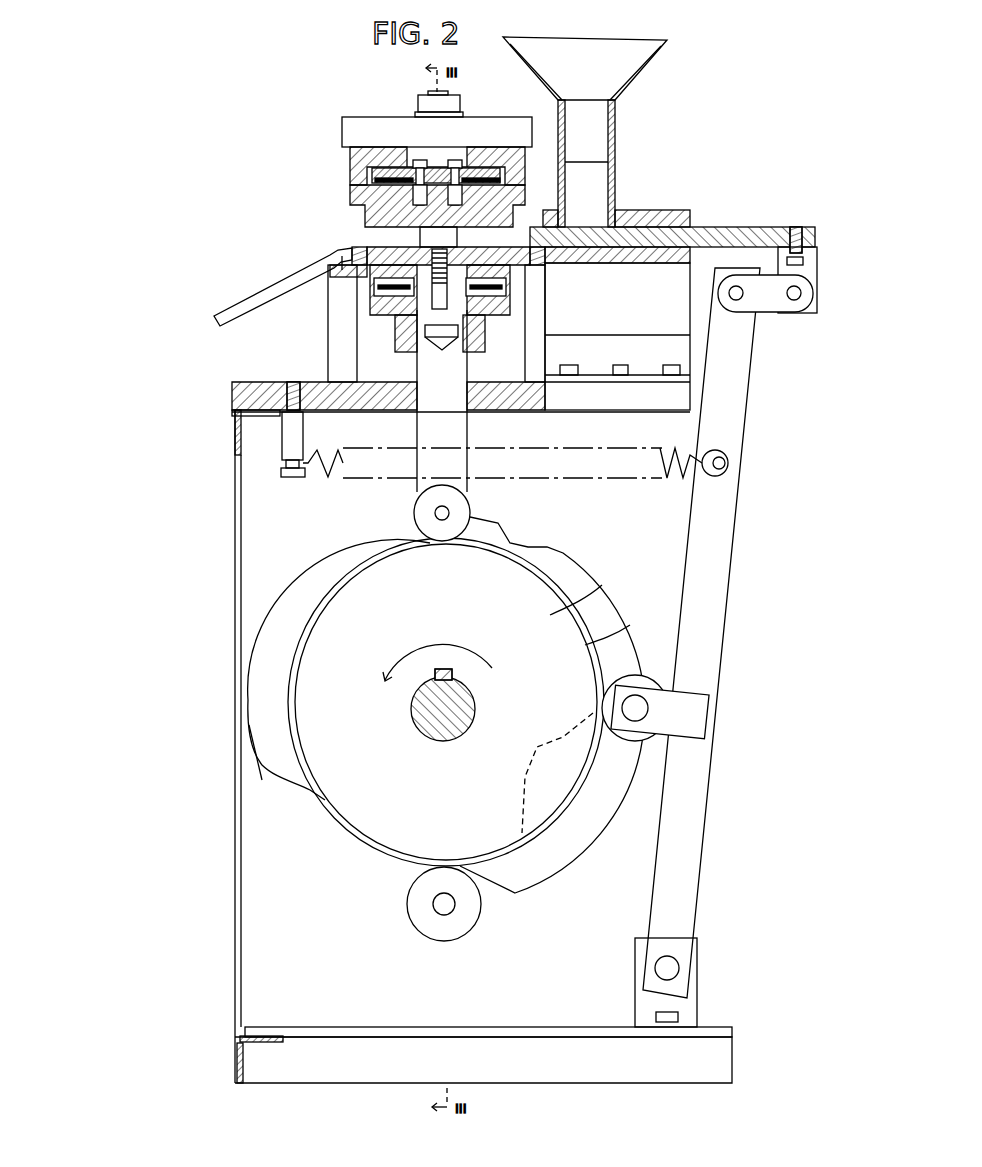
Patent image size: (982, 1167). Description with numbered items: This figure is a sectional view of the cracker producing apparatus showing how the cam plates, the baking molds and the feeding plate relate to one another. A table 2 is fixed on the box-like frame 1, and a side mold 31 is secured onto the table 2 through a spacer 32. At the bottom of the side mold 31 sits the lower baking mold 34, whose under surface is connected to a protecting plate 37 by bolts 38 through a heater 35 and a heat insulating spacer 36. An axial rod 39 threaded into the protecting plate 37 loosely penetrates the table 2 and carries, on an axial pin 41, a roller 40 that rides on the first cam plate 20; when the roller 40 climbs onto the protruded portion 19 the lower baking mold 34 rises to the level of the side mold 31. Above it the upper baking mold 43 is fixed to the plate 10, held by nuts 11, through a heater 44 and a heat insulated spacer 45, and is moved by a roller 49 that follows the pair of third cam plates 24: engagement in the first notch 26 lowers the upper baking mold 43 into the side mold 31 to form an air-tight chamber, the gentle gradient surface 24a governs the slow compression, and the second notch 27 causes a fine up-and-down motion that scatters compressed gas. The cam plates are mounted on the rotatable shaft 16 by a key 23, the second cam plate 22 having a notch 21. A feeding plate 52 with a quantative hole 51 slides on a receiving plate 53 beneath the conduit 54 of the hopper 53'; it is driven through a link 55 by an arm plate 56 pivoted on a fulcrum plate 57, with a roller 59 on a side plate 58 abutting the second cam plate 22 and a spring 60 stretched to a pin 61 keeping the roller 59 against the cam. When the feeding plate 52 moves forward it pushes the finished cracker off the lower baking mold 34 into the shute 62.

The box-like frame 1 is at (233, 436).
The table 2 is at (262, 380).
The plate 10 is at (376, 126).
The nuts 11 is at (455, 107).
The rotatable shaft 16 is at (470, 704).
The protruded portion 19 is at (490, 550).
The first cam plate 20 is at (460, 702).
The notch 21 is at (563, 737).
The second cam plate 22 is at (617, 628).
The key 23 is at (450, 669).
The third cam plate 24 is at (570, 858).
The gentle gradient surface 24a is at (250, 705).
The first notch 26 is at (390, 862).
The second notch 27 is at (548, 546).
The side mold 31 is at (358, 250).
The spacer 32 is at (328, 322).
The lower baking mold 34 is at (470, 250).
The heater 35 is at (508, 288).
The heat insulating spacer 36 is at (505, 311).
The protecting plate 37 is at (486, 342).
The bolts 38 is at (441, 350).
The axial rod 39 is at (467, 433).
The roller 40 is at (418, 506).
The axial pin 41 is at (450, 510).
The upper baking mold 43 is at (367, 212).
The heater 44 is at (502, 178).
The heat insulated spacer 45 is at (352, 162).
The roller 49 is at (481, 912).
The quantative hole 51 is at (588, 232).
The feeding plate 52 is at (716, 228).
The receiving plate 53 is at (610, 328).
The hopper 53' is at (593, 68).
The conduit 54 is at (616, 172).
The link 55 is at (771, 305).
The arm plate 56 is at (718, 616).
The fulcrum plate 57 is at (692, 990).
The side plate 58 is at (672, 705).
The roller 59 is at (650, 680).
The spring 60 is at (676, 476).
The pin 61 is at (294, 477).
The shute 62 is at (282, 290).